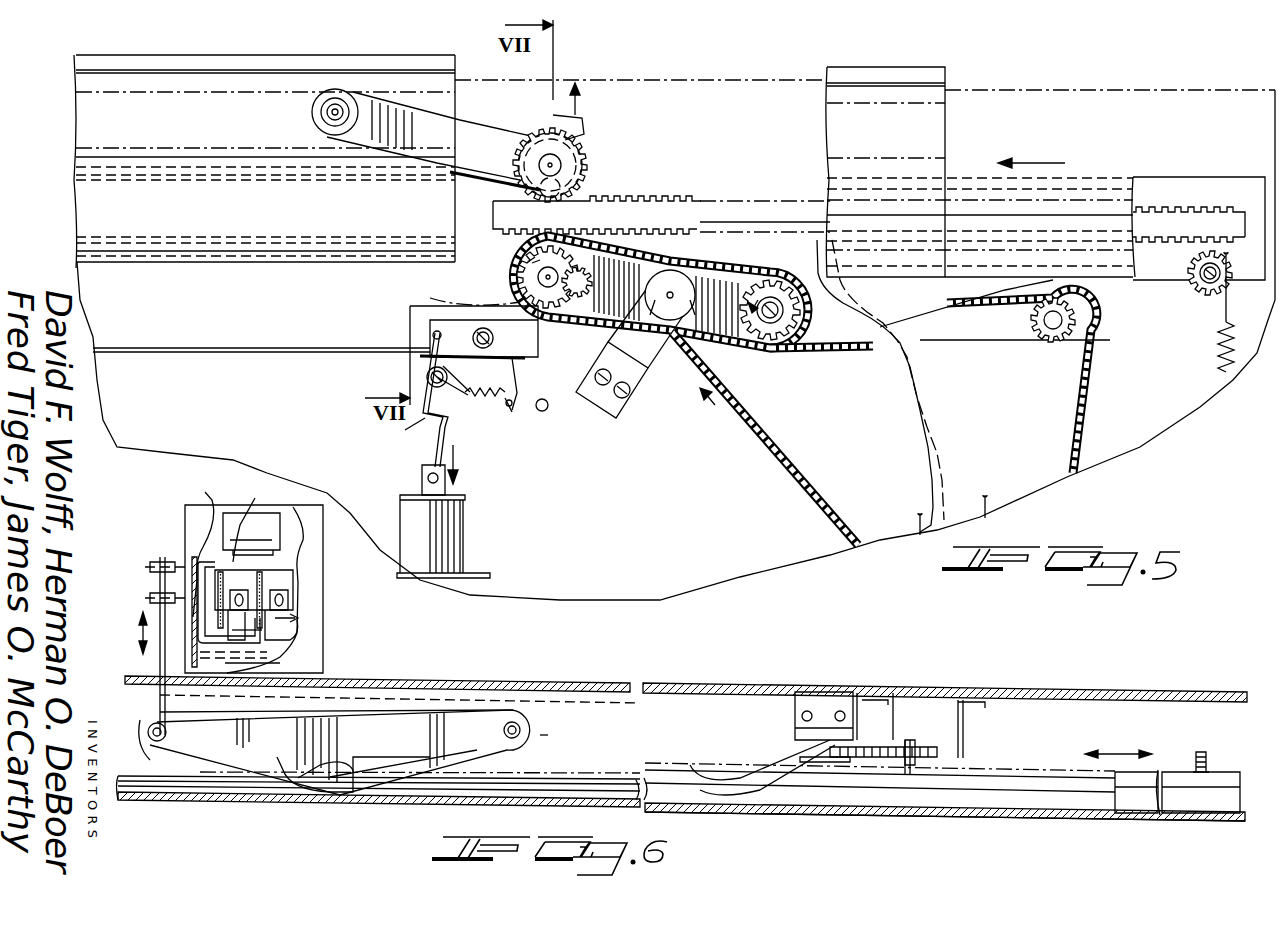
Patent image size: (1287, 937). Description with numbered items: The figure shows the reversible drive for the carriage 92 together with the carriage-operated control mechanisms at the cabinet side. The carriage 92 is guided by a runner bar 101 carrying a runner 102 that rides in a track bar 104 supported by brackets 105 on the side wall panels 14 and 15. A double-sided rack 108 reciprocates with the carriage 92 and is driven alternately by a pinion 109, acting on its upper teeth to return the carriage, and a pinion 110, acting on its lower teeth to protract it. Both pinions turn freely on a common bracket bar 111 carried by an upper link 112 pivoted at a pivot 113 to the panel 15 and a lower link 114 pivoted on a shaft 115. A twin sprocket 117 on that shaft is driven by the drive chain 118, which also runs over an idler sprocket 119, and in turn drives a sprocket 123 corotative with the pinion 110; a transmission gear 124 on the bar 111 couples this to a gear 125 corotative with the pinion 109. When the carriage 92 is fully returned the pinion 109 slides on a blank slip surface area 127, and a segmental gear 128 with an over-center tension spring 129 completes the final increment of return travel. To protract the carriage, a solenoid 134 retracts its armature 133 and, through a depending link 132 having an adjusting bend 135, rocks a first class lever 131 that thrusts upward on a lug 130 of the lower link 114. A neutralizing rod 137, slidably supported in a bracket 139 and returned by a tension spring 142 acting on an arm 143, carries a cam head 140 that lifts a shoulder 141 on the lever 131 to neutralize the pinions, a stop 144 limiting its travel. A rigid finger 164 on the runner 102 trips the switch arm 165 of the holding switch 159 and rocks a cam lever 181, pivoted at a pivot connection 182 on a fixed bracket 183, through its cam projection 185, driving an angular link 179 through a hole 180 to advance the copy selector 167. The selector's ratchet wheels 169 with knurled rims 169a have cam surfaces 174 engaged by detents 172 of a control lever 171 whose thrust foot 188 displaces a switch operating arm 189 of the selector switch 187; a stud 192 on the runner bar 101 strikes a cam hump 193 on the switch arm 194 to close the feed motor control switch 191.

In FIG. 6, the side wall panel 14 is at (655, 655).
In FIG. 5, the side wall panel 15 is at (920, 516).
In FIG. 5, the carriage 92 is at (925, 65).
In FIG. 6, the runner bar 101 is at (1245, 760).
In FIG. 6, the runner 102 is at (1180, 795).
In FIG. 6, the track bar 104 is at (1040, 815).
In FIG. 6, the brackets 105 is at (965, 735).
In FIG. 5, the double-sided rack 108 is at (655, 205).
In FIG. 5, the pinion 109 is at (580, 170).
In FIG. 5, the pinion 110 is at (535, 291).
In FIG. 5, the bracket bar 111 is at (578, 120).
In FIG. 5, the upper link 112 is at (462, 130).
In FIG. 5, the pivot 113 is at (322, 113).
In FIG. 5, the lower link 114 is at (575, 297).
In FIG. 5, the shaft 115 is at (775, 298).
In FIG. 5, the twin sprocket 117 is at (768, 323).
In FIG. 5, the drive chain 118 is at (855, 355).
In FIG. 5, the idler sprocket 119 is at (700, 318).
In FIG. 5, the sprocket 123 is at (593, 262).
In FIG. 5, the transmission gear 124 is at (565, 210).
In FIG. 5, the gear 125 is at (585, 150).
In FIG. 5, the blank slip surface area 127 is at (495, 187).
In FIG. 5, the segmental gear 128 is at (1195, 262).
In FIG. 5, the over-center tension spring 129 is at (1215, 345).
In FIG. 5, the depending lug 130 is at (462, 292).
In FIG. 5, the first class lever 131 is at (410, 313).
In FIG. 5, the depending link 132 is at (420, 420).
In FIG. 5, the armature 133 is at (445, 487).
In FIG. 5, the solenoid 134 is at (465, 535).
In FIG. 5, the angular offsetting bend 135 is at (396, 442).
In FIG. 5, the neutralizing rod 137 is at (250, 355).
In FIG. 5, the bracket 139 is at (430, 365).
In FIG. 5, the cam head 140 is at (458, 366).
In FIG. 5, the angular offsetting shoulder 141 is at (525, 377).
In FIG. 5, the tension spring 142 is at (488, 415).
In FIG. 5, the arm 143 is at (520, 415).
In FIG. 5, the stop 144 is at (548, 410).
In FIG. 6, the two-way holding switch 159 is at (825, 705).
In FIG. 6, the rigid finger 164 is at (190, 790).
In FIG. 6, the switch arm 165 is at (770, 745).
In FIG. 6, the copy selector 167 is at (298, 626).
In FIG. 6, the ratchet wheels 169 is at (275, 580).
In FIG. 6, the knurled rims 169a is at (215, 578).
In FIG. 6, the control lever 171 is at (225, 665).
In FIG. 6, the detents 172 is at (280, 645).
In FIG. 6, the cam surfaces 174 is at (275, 572).
In FIG. 6, the angular link 179 is at (145, 660).
In FIG. 6, the hole 180 is at (148, 716).
In FIG. 6, the cam lever 181 is at (400, 715).
In FIG. 6, the pivot connection 182 is at (512, 722).
In FIG. 6, the fixed bracket 183 is at (547, 722).
In FIG. 6, the cam projection 185 is at (300, 785).
In FIG. 6, the selector switch 187 is at (251, 534).
In FIG. 6, the thrust foot 188 is at (200, 545).
In FIG. 6, the switch operating arm 189 is at (251, 521).
In FIG. 6, the feed motor control switch 191 is at (830, 762).
In FIG. 6, the stud 192 is at (1205, 752).
In FIG. 6, the cam hump 193 is at (930, 737).
In FIG. 6, the switch arm 194 is at (885, 730).